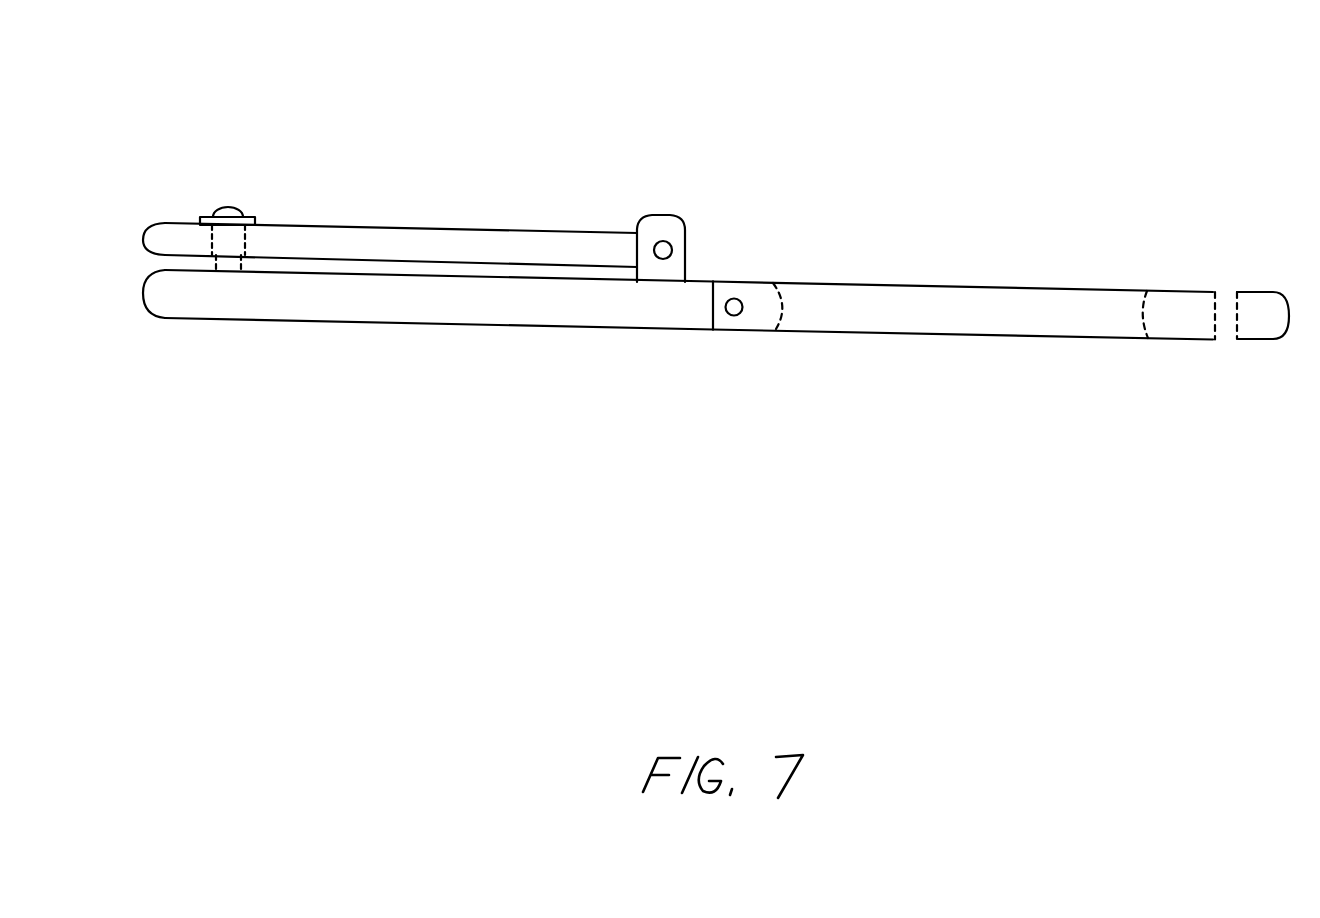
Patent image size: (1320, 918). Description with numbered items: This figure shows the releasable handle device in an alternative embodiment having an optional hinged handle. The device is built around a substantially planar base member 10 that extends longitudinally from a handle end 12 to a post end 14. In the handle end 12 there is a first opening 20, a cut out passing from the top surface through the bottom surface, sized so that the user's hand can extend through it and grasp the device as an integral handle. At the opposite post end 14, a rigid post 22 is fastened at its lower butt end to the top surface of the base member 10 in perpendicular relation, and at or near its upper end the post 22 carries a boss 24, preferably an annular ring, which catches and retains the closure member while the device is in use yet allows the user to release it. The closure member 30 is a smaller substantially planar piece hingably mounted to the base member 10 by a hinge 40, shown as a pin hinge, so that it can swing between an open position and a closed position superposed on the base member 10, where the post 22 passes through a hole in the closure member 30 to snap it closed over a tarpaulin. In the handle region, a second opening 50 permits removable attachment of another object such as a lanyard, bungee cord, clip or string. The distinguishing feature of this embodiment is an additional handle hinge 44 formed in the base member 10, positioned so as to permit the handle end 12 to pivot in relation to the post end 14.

The base member 10 is at (679, 409).
The handle end 12 is at (870, 366).
The post end 14 is at (345, 340).
The first opening 20 is at (783, 294).
The post 22 is at (228, 262).
The boss 24 is at (200, 216).
The closure member 30 is at (402, 244).
The hinge 40 is at (672, 250).
The handle hinge 44 is at (736, 313).
The second opening 50 is at (1218, 304).